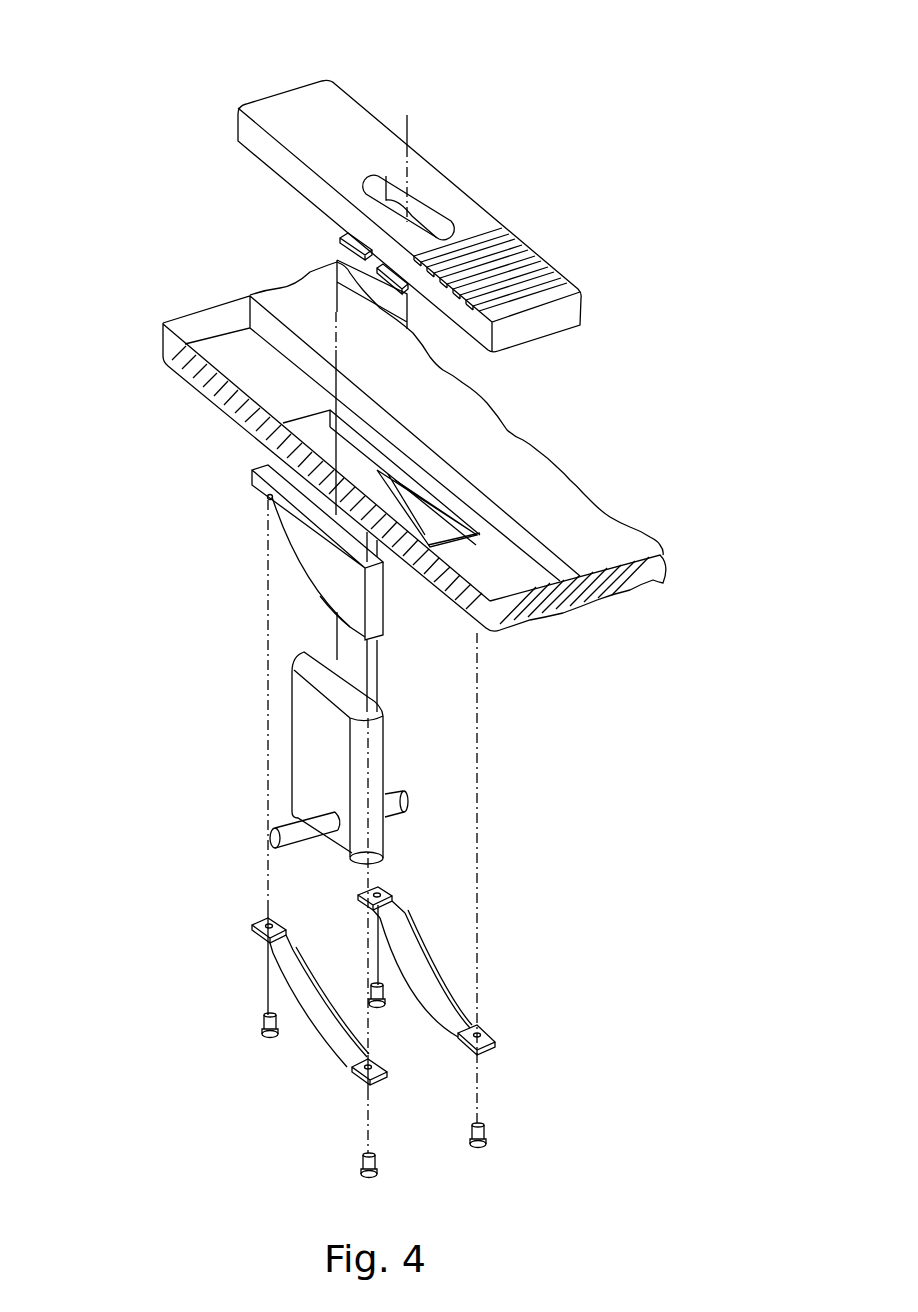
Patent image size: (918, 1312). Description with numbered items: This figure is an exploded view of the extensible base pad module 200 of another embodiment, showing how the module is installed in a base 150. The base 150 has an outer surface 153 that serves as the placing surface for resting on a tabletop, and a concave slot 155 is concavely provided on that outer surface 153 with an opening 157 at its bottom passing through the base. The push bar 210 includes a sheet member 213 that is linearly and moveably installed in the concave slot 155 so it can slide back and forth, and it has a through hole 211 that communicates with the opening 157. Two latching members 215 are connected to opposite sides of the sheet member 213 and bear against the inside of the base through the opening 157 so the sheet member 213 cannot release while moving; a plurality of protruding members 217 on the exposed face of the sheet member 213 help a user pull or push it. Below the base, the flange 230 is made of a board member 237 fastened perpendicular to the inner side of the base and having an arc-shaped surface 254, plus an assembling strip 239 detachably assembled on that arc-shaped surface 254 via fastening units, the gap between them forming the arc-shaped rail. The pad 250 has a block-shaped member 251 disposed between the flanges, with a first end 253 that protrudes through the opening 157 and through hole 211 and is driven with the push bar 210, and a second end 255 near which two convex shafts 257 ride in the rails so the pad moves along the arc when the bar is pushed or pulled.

The extensible base pad module 200 is at (618, 84).
The push bar 210 is at (395, 184).
The through hole 211 is at (443, 220).
The sheet member 213 is at (323, 95).
The latching members 215 is at (345, 233).
The protruding members 217 is at (525, 250).
The base 150 is at (388, 461).
The outer surface 153 is at (607, 543).
The concave slot 155 is at (247, 367).
The opening 157 is at (320, 438).
The flange 230 is at (248, 588).
The board member 237 is at (318, 582).
The arc-shaped surface 254 is at (293, 545).
The assembling strip 239 is at (337, 1043).
The pad 250 is at (263, 767).
The block-shaped member 251 is at (300, 705).
The first end 253 is at (300, 658).
The second end 255 is at (342, 855).
The convex shafts 257 is at (270, 838).